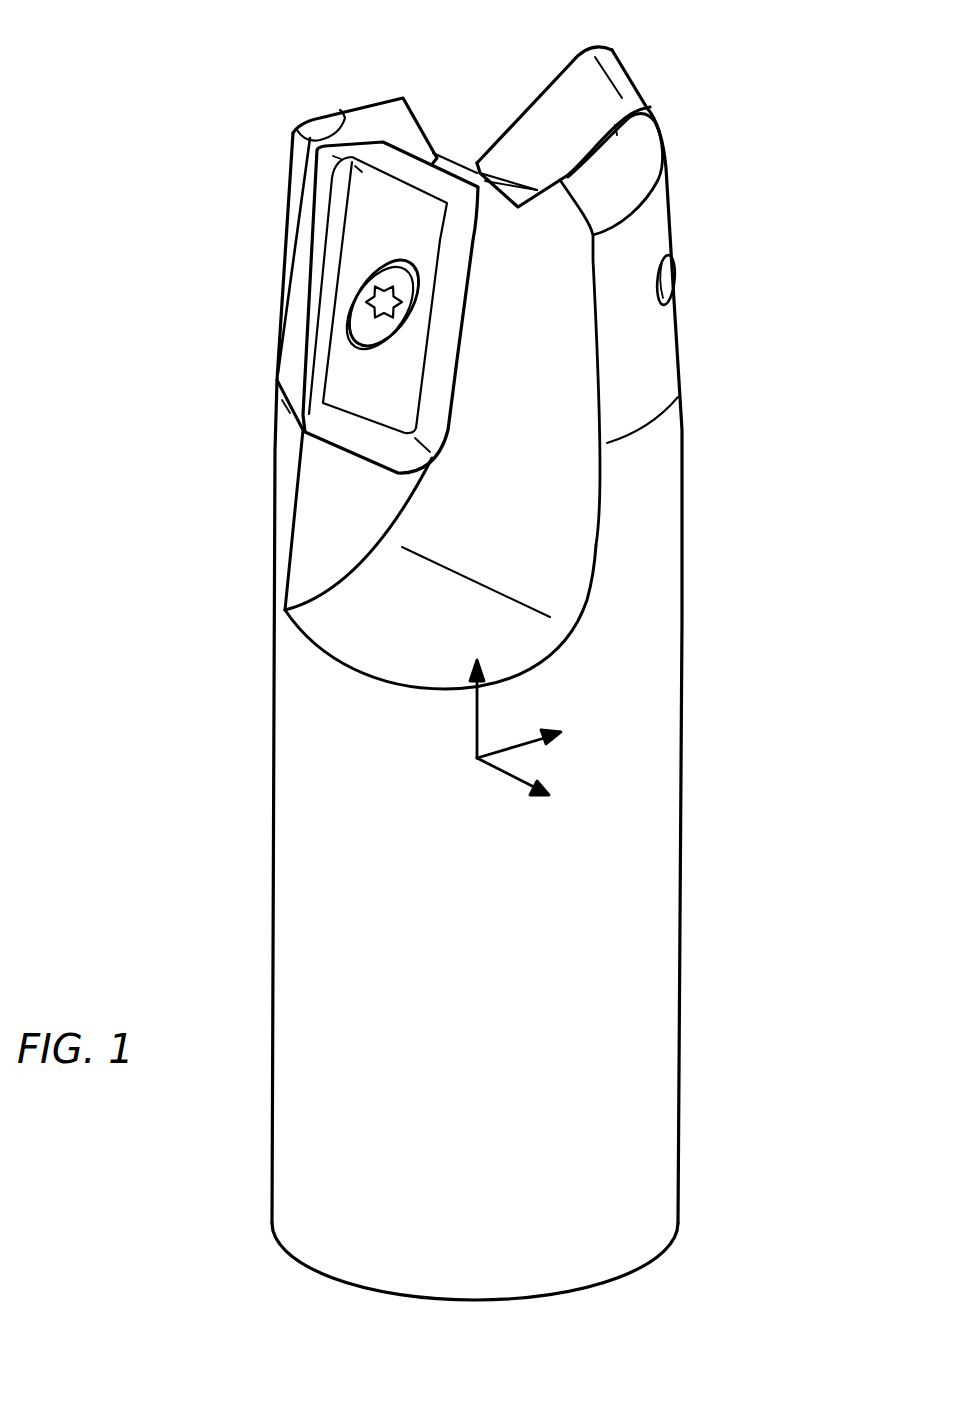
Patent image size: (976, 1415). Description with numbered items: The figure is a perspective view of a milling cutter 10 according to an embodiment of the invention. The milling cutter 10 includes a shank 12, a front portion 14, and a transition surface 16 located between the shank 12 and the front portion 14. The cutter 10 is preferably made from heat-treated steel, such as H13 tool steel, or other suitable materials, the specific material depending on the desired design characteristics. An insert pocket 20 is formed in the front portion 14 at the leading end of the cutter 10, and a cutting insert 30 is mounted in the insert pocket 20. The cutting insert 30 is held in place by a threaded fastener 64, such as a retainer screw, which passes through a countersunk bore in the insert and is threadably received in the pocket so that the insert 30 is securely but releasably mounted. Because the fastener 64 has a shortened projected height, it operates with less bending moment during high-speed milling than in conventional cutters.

The milling cutter 10 is at (104, 97).
The shank 12 is at (652, 956).
The front portion 14 is at (655, 345).
The transition surface 16 is at (412, 623).
The insert pocket 20 is at (289, 261).
The cutting insert 30 is at (305, 313).
The threaded fastener 64 is at (360, 327).